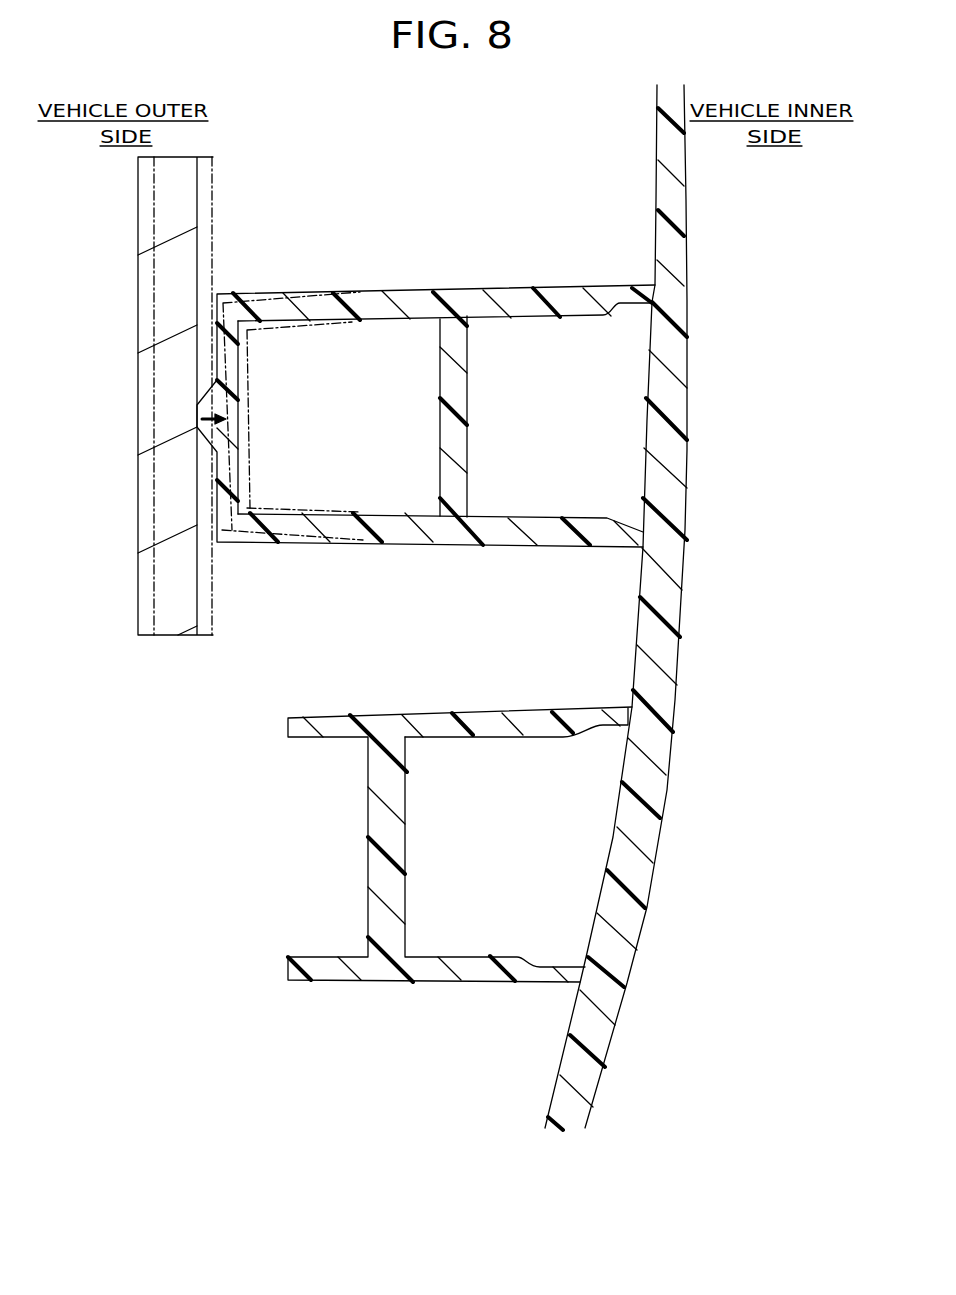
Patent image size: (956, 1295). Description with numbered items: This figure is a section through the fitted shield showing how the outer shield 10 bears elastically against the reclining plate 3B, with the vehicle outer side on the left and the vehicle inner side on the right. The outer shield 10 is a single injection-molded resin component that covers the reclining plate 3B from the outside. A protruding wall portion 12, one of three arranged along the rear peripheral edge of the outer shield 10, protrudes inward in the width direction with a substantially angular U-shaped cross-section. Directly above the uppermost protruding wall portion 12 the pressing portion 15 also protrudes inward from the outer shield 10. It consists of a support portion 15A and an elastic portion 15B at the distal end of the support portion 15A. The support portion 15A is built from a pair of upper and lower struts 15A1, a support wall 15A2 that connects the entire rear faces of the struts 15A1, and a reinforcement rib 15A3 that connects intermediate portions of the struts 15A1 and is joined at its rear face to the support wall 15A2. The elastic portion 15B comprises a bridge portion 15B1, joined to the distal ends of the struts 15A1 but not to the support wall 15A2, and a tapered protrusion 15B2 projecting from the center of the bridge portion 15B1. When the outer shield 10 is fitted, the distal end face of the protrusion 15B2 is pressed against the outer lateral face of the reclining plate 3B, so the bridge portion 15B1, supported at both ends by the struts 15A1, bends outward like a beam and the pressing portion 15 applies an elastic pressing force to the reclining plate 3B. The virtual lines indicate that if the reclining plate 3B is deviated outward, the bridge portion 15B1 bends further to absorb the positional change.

The reclining plate 3B is at (165, 292).
The outer shield 10 is at (692, 205).
The pressing portion 15 is at (458, 552).
The support portion 15A is at (442, 360).
The struts 15A1 is at (388, 528).
The support wall 15A2 is at (510, 427).
The reinforcement rib 15A3 is at (476, 380).
The elastic portion 15B is at (421, 467).
The bridge portion 15B1 is at (228, 470).
The protrusion 15B2 is at (200, 407).
The protruding wall portion 12 is at (385, 967).